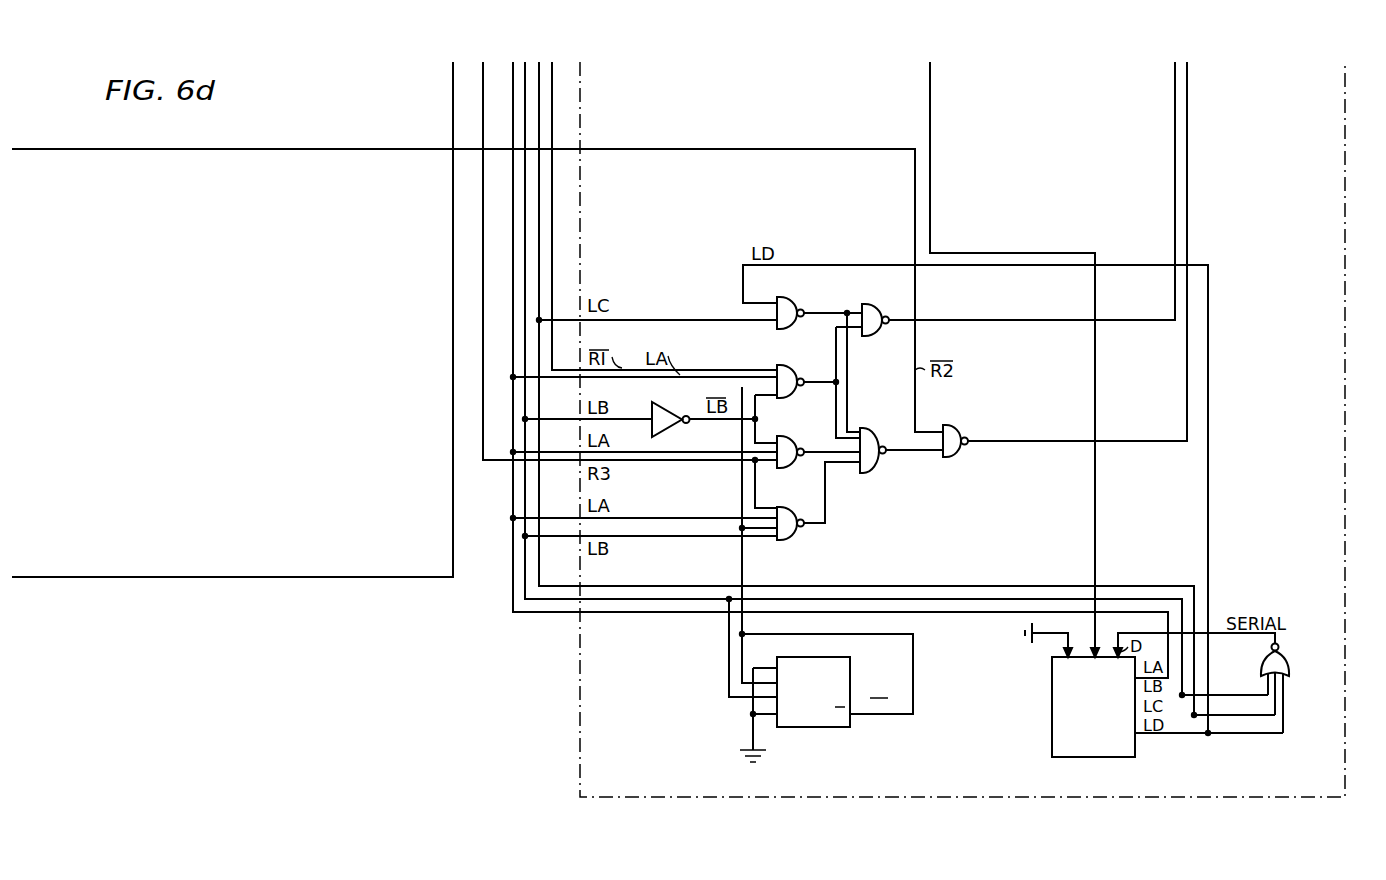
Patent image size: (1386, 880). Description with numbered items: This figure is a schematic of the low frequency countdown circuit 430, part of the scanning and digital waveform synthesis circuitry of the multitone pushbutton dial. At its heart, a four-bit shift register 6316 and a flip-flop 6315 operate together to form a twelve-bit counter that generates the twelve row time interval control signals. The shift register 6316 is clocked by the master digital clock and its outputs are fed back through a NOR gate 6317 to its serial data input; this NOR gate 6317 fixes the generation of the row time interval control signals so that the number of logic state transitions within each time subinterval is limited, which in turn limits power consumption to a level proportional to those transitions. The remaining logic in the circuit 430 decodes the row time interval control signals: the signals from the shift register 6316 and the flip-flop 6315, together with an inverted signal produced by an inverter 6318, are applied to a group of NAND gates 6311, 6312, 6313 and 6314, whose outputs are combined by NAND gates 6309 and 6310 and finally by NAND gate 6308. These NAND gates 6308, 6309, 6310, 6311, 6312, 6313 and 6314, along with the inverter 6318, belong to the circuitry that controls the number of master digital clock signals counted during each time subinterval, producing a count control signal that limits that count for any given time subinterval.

The low frequency countdown circuit 430 is at (798, 91).
The NAND gate 6308 is at (955, 429).
The NAND gate 6309 is at (871, 309).
The NAND gate 6310 is at (875, 437).
The NAND gate 6311 is at (789, 300).
The NAND gate 6312 is at (787, 368).
The NAND gate 6313 is at (788, 438).
The NAND gate 6314 is at (788, 508).
The flip-flop 6315 is at (815, 723).
The four-bit shift register 6316 is at (1087, 757).
The NOR gate 6317 is at (1297, 685).
The inverter 6318 is at (640, 409).